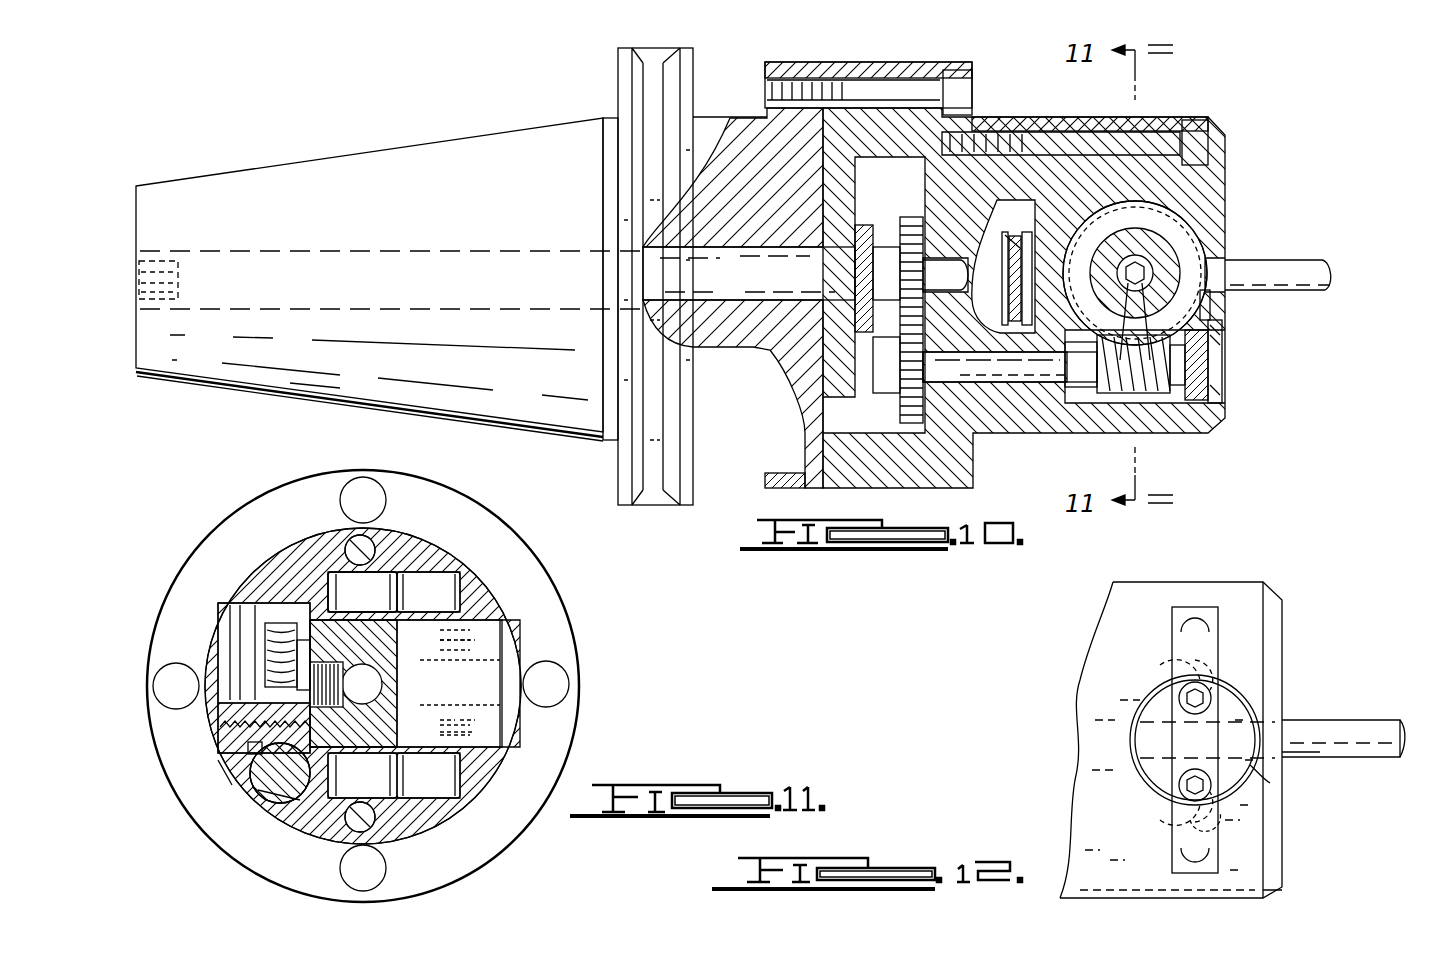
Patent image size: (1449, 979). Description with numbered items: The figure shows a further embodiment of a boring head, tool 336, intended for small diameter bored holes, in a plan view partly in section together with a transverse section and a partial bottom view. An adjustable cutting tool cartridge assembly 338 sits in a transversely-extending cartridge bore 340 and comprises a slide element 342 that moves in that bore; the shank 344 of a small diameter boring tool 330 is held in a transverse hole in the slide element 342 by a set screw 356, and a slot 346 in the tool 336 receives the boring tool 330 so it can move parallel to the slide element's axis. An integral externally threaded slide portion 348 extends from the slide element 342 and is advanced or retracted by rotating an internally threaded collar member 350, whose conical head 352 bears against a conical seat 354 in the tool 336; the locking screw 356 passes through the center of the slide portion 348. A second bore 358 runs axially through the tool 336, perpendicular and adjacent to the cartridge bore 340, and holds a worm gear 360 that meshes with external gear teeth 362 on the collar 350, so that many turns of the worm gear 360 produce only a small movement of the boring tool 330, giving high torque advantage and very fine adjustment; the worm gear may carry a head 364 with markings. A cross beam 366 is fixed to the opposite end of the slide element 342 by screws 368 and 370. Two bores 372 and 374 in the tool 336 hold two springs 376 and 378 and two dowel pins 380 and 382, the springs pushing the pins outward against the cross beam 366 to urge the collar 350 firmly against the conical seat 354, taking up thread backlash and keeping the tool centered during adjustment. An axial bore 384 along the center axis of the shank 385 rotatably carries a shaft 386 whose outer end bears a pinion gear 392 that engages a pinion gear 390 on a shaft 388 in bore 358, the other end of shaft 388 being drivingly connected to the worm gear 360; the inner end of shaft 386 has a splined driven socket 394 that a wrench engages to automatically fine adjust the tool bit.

In FIG. 10, the boring tool 330 is at (1316, 266).
In FIG. 12, the boring tool 330 is at (1372, 728).
In FIG. 10, the tool 336 is at (746, 468).
In FIG. 11, the tool 336 is at (560, 641).
In FIG. 12, the tool 336 is at (1250, 635).
In FIG. 10, the cutting tool cartridge assembly 338 is at (1168, 238).
In FIG. 11, the cutting tool cartridge assembly 338 is at (222, 752).
In FIG. 12, the cutting tool cartridge assembly 338 is at (1240, 730).
In FIG. 10, the cartridge bore 340 is at (1178, 312).
In FIG. 11, the cartridge bore 340 is at (338, 590).
In FIG. 12, the cartridge bore 340 is at (1255, 785).
In FIG. 11, the slide element 342 is at (430, 750).
In FIG. 12, the slide element 342 is at (1148, 740).
In FIG. 11, the shank 344 is at (378, 684).
In FIG. 12, the shank 344 is at (1187, 788).
In FIG. 10, the slot 346 is at (1240, 298).
In FIG. 12, the slot 346 is at (1308, 758).
In FIG. 10, the externally threaded slide portion 348 is at (1150, 400).
In FIG. 11, the externally threaded slide portion 348 is at (260, 716).
In FIG. 10, the collar member 350 is at (1030, 366).
In FIG. 11, the collar member 350 is at (286, 620).
In FIG. 11, the conical head 352 is at (265, 758).
In FIG. 11, the conical seat 354 is at (280, 640).
In FIG. 10, the set screw 356 is at (1120, 380).
In FIG. 11, the set screw 356 is at (328, 670).
In FIG. 10, the bore 358 is at (1135, 292).
In FIG. 11, the bore 358 is at (290, 795).
In FIG. 10, the worm gear 360 is at (1132, 400).
In FIG. 11, the worm gear 360 is at (275, 775).
In FIG. 11, the external gear teeth 362 is at (300, 665).
In FIG. 10, the head 364 is at (1205, 365).
In FIG. 11, the cross beam 366 is at (470, 735).
In FIG. 12, the cross beam 366 is at (1178, 710).
In FIG. 11, the screw 368 is at (500, 720).
In FIG. 12, the screw 368 is at (1170, 852).
In FIG. 11, the screw 370 is at (500, 648).
In FIG. 12, the screw 370 is at (1185, 688).
In FIG. 11, the bore 372 is at (440, 798).
In FIG. 12, the bore 372 is at (1215, 828).
In FIG. 11, the bore 374 is at (428, 575).
In FIG. 12, the bore 374 is at (1175, 637).
In FIG. 11, the spring 376 is at (400, 800).
In FIG. 11, the spring 378 is at (370, 580).
In FIG. 11, the dowel pin 380 is at (420, 795).
In FIG. 11, the dowel pin 382 is at (440, 575).
In FIG. 10, the axial bore 384 is at (770, 258).
In FIG. 10, the shank 385 is at (393, 172).
In FIG. 10, the shaft 386 is at (712, 262).
In FIG. 10, the shaft 388 is at (1030, 385).
In FIG. 10, the pinion gear 390 is at (906, 427).
In FIG. 10, the pinion gear 392 is at (910, 216).
In FIG. 10, the splined driven socket 394 is at (182, 248).